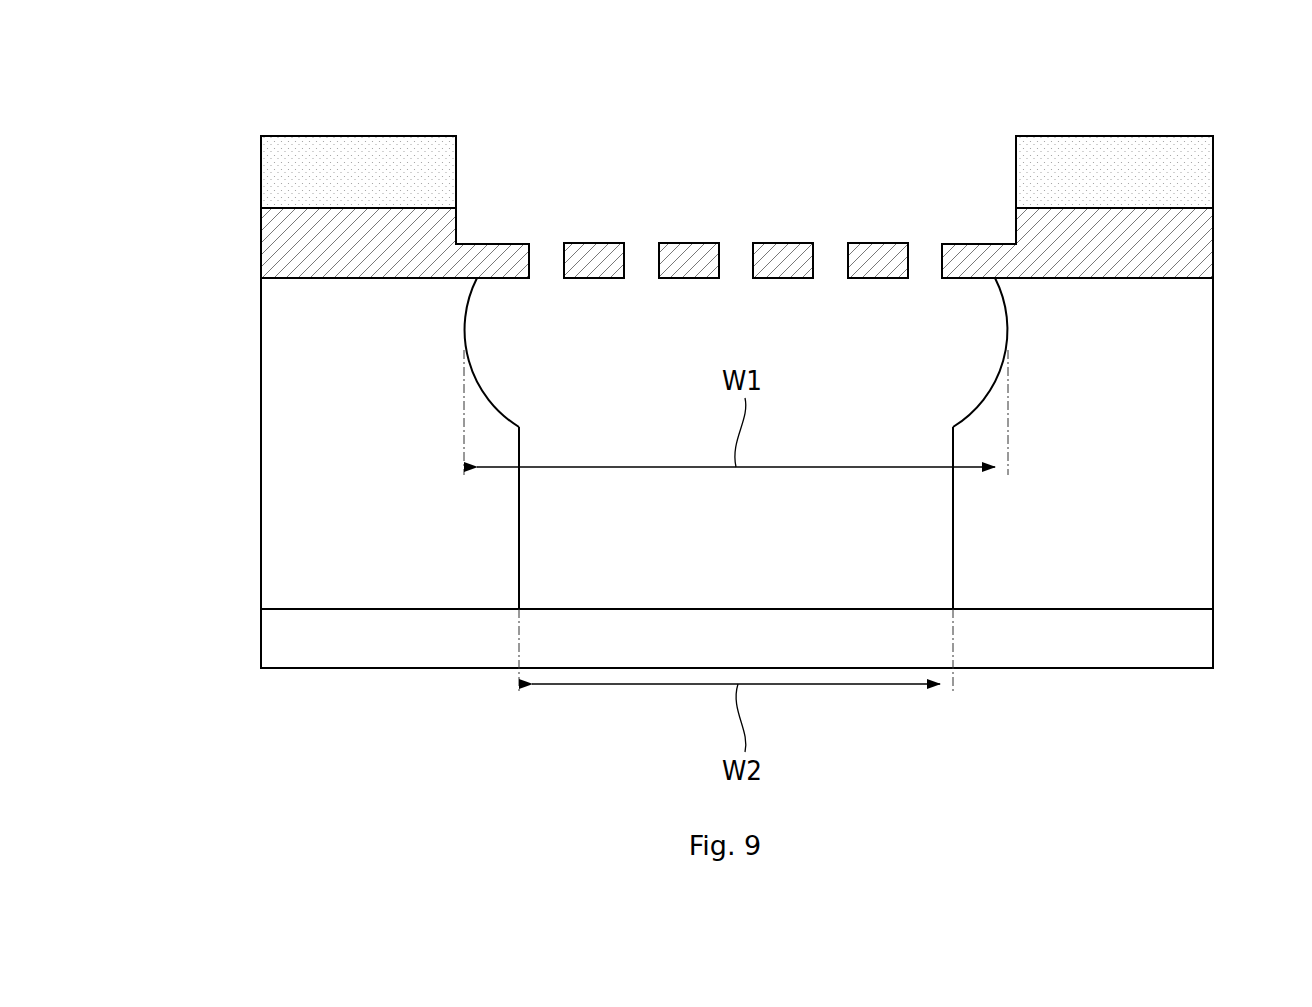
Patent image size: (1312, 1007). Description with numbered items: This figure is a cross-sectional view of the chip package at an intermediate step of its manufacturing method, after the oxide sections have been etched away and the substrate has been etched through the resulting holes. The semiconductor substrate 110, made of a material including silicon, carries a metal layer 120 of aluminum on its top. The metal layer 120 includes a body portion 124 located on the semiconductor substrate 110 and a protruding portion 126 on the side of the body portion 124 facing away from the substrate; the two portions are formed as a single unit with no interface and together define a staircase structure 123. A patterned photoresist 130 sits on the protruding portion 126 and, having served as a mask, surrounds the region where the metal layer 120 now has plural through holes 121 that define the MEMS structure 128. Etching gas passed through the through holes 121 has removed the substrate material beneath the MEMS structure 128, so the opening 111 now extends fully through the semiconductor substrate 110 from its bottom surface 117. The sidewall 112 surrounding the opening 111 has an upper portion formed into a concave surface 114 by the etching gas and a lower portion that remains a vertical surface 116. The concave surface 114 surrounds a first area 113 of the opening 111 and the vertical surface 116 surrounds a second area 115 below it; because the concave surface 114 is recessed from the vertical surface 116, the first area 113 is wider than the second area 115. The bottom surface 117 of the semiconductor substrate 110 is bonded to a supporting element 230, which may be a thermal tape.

The semiconductor substrate 110 is at (337, 450).
The opening 111 is at (740, 530).
The sidewall 112 is at (586, 362).
The first area 113 is at (990, 314).
The concave surface 114 is at (480, 383).
The second area 115 is at (950, 514).
The vertical surface 116 is at (519, 443).
The bottom surface 117 is at (404, 617).
The metal layer 120 is at (676, 153).
The through holes 121 is at (735, 238).
The staircase structure 123 is at (516, 175).
The body portion 124 is at (502, 262).
The protruding portion 126 is at (423, 220).
The MEMS structure 128 is at (783, 212).
The patterned photoresist 130 is at (285, 173).
The supporting element 230 is at (287, 639).